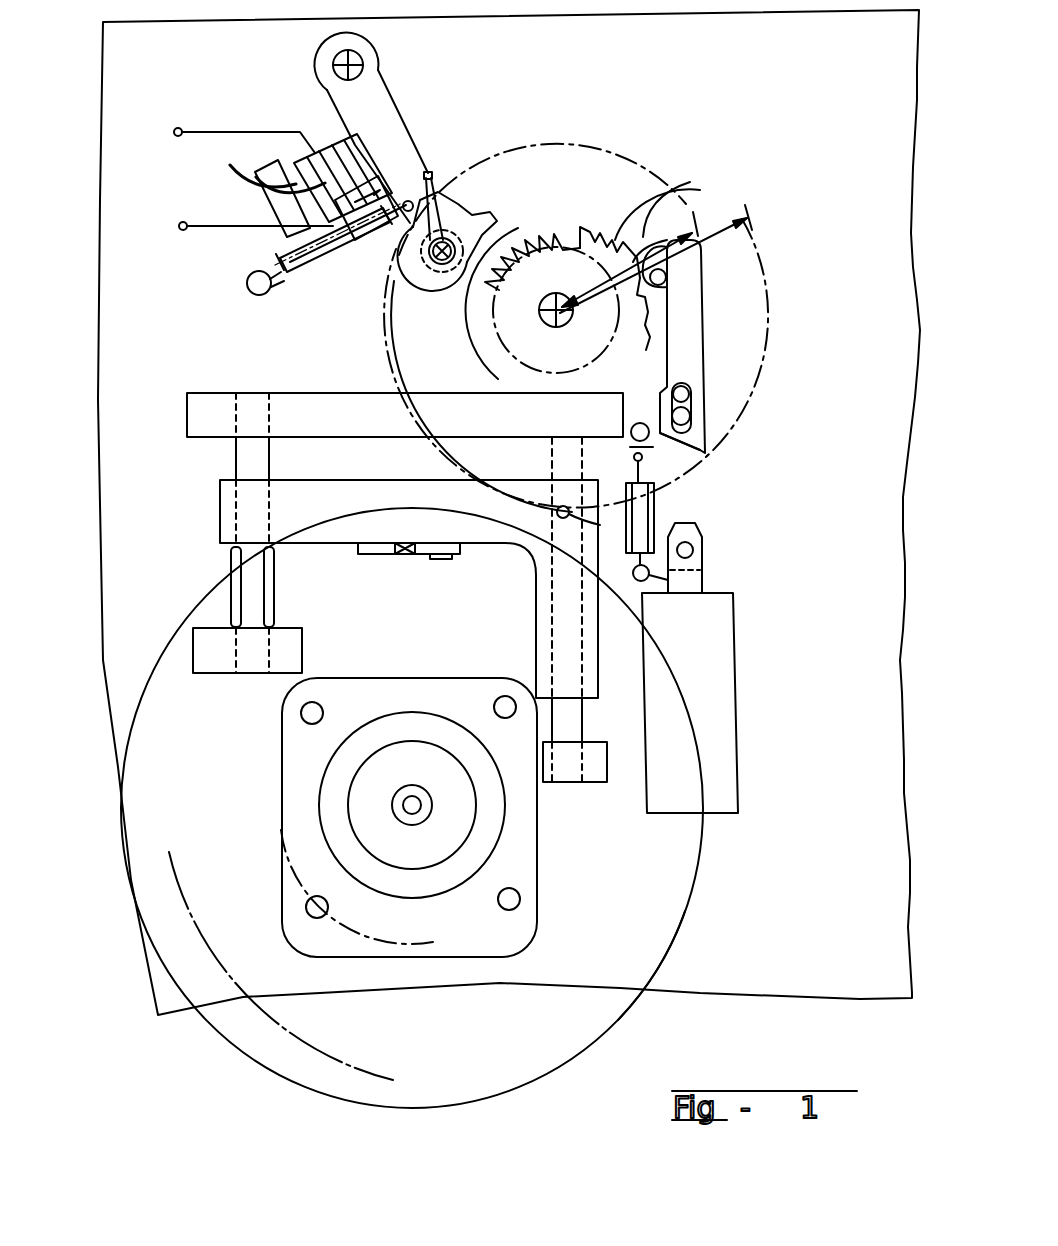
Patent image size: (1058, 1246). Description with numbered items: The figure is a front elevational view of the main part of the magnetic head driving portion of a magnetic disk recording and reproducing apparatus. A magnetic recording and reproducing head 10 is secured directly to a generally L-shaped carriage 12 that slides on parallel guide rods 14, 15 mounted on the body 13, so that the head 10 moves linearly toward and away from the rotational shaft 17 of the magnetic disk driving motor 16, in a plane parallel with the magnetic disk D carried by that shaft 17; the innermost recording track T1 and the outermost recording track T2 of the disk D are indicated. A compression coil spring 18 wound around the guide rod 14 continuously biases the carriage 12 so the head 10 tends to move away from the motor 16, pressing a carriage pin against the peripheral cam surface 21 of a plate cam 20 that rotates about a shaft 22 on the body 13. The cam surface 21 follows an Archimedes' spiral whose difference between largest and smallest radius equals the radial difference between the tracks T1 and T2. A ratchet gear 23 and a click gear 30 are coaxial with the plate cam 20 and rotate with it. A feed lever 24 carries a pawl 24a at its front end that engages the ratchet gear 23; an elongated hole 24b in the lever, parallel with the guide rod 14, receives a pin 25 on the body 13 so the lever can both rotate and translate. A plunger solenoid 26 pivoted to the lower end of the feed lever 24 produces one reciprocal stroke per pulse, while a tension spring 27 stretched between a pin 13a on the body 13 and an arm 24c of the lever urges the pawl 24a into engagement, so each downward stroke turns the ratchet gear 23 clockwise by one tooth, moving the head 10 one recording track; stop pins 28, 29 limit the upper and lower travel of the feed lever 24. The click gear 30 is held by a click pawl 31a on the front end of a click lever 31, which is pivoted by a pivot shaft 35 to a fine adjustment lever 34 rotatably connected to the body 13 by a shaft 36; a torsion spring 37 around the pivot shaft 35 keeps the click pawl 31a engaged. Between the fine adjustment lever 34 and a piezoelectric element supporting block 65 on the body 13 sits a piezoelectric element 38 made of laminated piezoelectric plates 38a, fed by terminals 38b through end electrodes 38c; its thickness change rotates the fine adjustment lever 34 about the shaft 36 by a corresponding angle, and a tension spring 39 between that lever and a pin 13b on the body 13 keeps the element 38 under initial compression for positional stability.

The magnetic recording and reproducing head 10 is at (405, 554).
The carriage 12 is at (227, 520).
The body 13 is at (148, 791).
The pin 13a is at (702, 580).
The pin 13b is at (258, 295).
The guide rod 14 is at (245, 466).
The guide rod 15 is at (573, 723).
The magnetic disk driving motor 16 is at (317, 782).
The rotational shaft 17 is at (396, 822).
The compression coil spring 18 is at (230, 595).
The plate cam 20 is at (770, 245).
The peripheral cam surface 21 is at (785, 322).
The shaft 22 is at (564, 294).
The ratchet gear 23 is at (655, 200).
The feed lever 24 is at (707, 348).
The pawl 24a is at (660, 215).
The elongated hole 24b is at (690, 393).
The arm 24c is at (700, 190).
The pin 25 is at (690, 415).
The plunger solenoid 26 is at (723, 673).
The tension spring 27 is at (703, 500).
The stop pin 28 is at (672, 275).
The stop pin 29 is at (707, 453).
The click gear 30 is at (578, 232).
The click lever 31 is at (508, 215).
The click pawl 31a is at (558, 240).
The fine adjustment lever 34 is at (378, 102).
The pivot shaft 35 is at (438, 215).
The shaft 36 is at (368, 44).
The torsion spring 37 is at (403, 177).
The piezoelectric element 38 is at (327, 140).
The laminated piezoelectric plate 38a is at (252, 191).
The terminal 38b is at (183, 222).
The end electrode 38c is at (318, 152).
The tension spring 39 is at (328, 277).
The piezoelectric element supporting block 65 is at (262, 232).
The magnetic disk D is at (673, 945).
The innermost recording track T1 is at (360, 940).
The outermost recording track T2 is at (345, 1055).